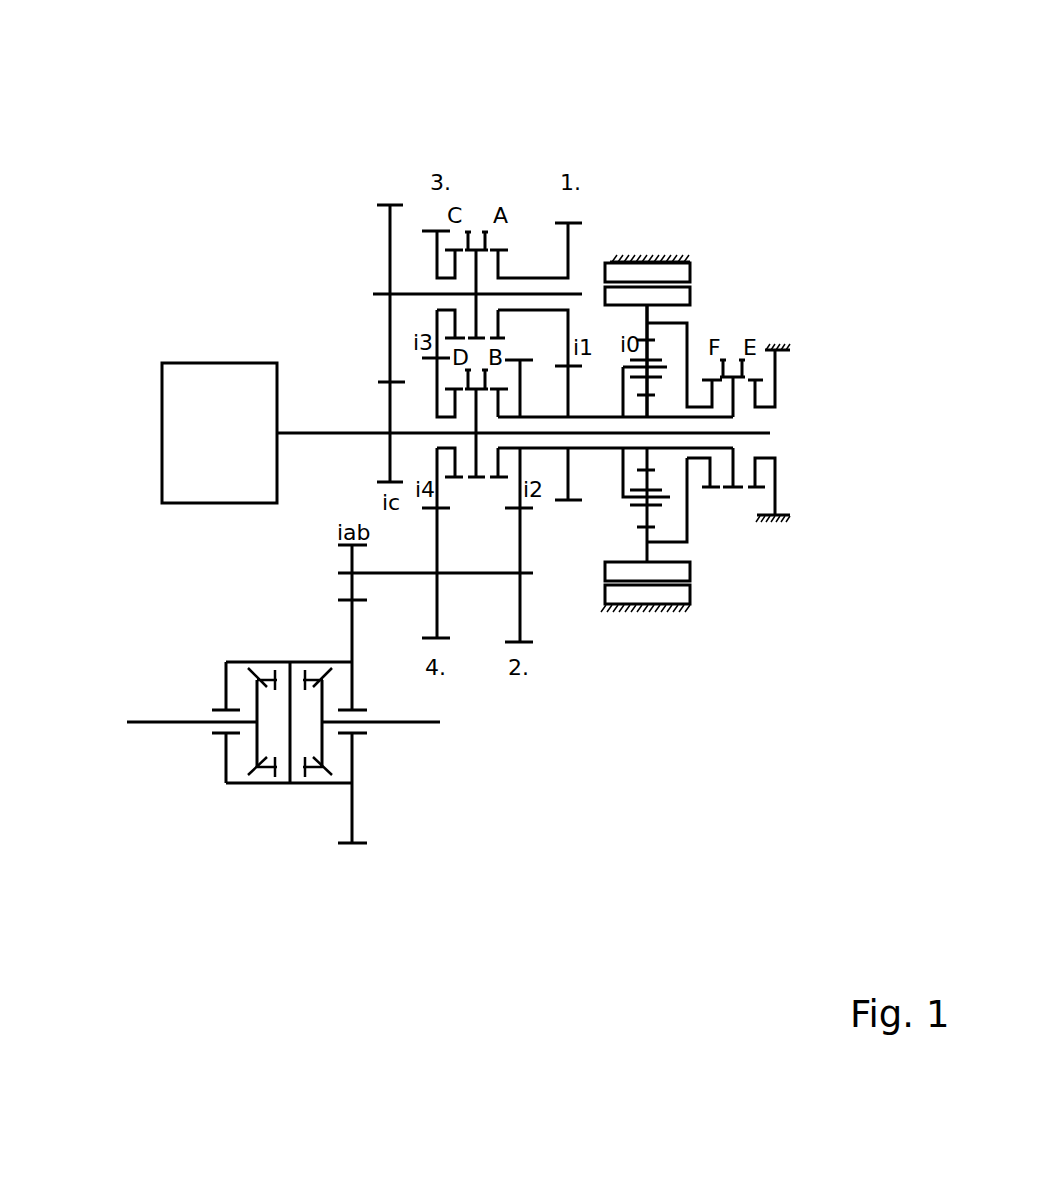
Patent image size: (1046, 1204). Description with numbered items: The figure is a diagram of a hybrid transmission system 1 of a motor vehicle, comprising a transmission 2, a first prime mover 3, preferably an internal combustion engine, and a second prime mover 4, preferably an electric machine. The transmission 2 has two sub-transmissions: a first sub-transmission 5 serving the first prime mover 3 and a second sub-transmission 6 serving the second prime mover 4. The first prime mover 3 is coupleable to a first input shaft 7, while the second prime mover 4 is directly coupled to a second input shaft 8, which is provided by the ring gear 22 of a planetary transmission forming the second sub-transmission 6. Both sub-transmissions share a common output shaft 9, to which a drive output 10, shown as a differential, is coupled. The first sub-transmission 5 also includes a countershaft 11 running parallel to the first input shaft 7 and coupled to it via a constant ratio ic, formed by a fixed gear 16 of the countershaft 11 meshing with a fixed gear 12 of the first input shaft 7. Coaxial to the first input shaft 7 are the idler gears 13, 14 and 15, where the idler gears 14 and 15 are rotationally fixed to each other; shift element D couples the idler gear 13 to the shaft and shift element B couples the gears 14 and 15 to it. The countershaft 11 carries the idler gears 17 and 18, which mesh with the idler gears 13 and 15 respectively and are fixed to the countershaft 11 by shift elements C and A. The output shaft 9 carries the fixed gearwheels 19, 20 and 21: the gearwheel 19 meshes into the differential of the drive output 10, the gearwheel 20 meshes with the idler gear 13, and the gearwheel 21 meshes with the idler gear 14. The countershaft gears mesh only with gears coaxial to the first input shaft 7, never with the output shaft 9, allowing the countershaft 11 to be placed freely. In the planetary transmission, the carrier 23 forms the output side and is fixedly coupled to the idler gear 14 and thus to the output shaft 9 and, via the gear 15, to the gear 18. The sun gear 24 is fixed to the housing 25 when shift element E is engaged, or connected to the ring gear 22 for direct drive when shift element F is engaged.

The transmission system 1 is at (750, 122).
The transmission 2 is at (793, 765).
The first prime mover 3 is at (205, 458).
The second prime mover 4 is at (700, 281).
The first sub-transmission 5 is at (578, 677).
The second sub-transmission 6 is at (787, 647).
The first input shaft 7 is at (383, 433).
The second input shaft 8 is at (650, 318).
The ring gear 22 is at (650, 318).
The output shaft 9 is at (423, 573).
The drive output 10 is at (303, 825).
The countershaft 11 is at (375, 292).
The fixed gear 12 is at (390, 457).
The idler gear 13 is at (435, 387).
The idler gear 14 is at (520, 389).
The idler gear 15 is at (565, 455).
The fixed gear 16 is at (389, 255).
The idler gear 17 is at (432, 250).
The idler gear 18 is at (572, 250).
The gearwheel 19 is at (343, 590).
The gearwheel 20 is at (437, 605).
The gearwheel 21 is at (520, 607).
The carrier 23 is at (665, 367).
The sun gear 24 is at (647, 455).
The housing 25 is at (783, 348).